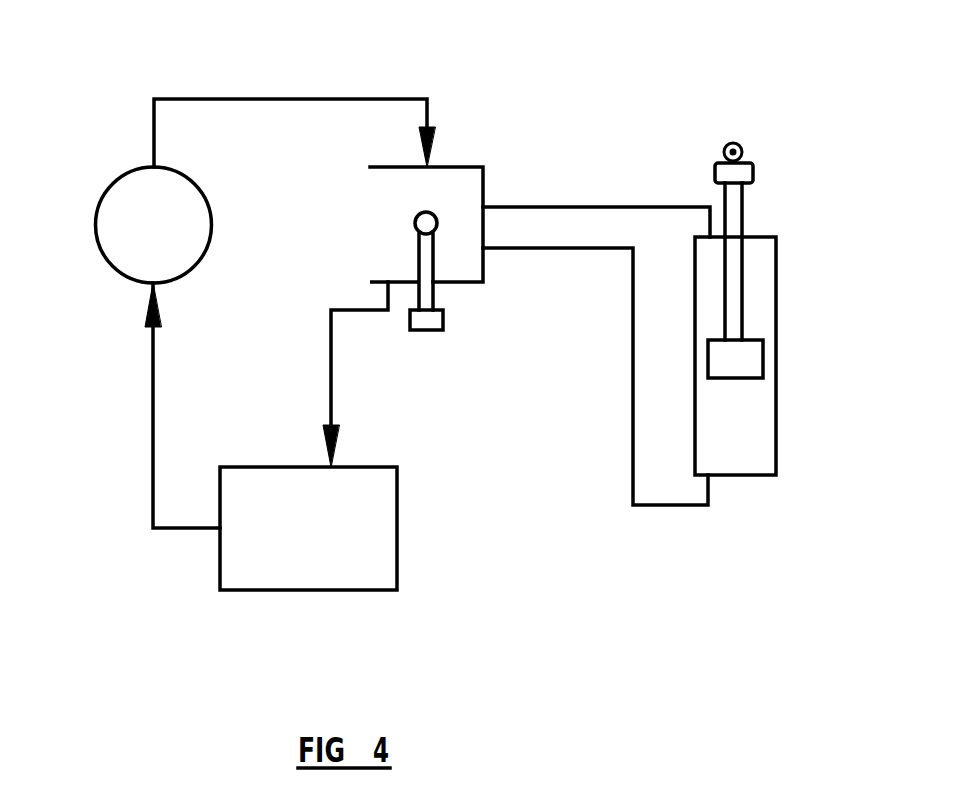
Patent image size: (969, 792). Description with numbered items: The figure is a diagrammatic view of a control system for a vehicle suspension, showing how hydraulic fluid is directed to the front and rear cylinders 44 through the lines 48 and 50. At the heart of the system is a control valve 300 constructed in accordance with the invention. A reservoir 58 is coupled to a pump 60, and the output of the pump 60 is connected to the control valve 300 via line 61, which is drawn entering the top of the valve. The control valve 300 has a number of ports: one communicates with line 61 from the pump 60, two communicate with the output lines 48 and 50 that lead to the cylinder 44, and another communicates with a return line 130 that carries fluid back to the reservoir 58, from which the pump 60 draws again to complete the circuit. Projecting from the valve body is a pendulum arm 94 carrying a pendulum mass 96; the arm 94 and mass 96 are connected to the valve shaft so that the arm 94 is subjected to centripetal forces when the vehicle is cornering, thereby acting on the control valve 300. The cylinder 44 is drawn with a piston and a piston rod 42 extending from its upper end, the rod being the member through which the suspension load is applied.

The piston rod 42 is at (735, 208).
The cylinder 44 is at (778, 427).
The output line 48 is at (565, 207).
The output line 50 is at (633, 418).
The reservoir 58 is at (399, 530).
The pump 60 is at (118, 175).
The line 61 is at (282, 98).
The pendulum arm 94 is at (418, 252).
The pendulum mass 96 is at (446, 320).
The return line 130 is at (331, 344).
The control valve 300 is at (486, 186).